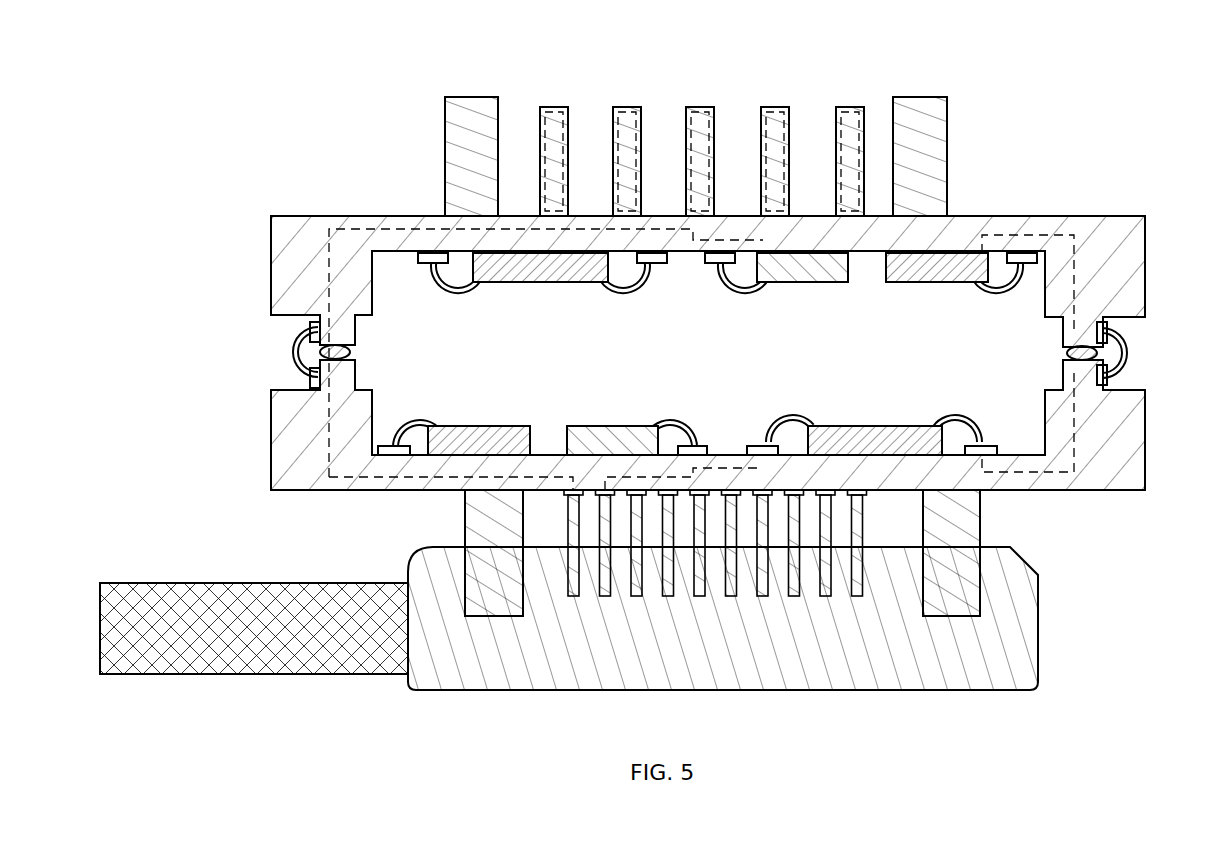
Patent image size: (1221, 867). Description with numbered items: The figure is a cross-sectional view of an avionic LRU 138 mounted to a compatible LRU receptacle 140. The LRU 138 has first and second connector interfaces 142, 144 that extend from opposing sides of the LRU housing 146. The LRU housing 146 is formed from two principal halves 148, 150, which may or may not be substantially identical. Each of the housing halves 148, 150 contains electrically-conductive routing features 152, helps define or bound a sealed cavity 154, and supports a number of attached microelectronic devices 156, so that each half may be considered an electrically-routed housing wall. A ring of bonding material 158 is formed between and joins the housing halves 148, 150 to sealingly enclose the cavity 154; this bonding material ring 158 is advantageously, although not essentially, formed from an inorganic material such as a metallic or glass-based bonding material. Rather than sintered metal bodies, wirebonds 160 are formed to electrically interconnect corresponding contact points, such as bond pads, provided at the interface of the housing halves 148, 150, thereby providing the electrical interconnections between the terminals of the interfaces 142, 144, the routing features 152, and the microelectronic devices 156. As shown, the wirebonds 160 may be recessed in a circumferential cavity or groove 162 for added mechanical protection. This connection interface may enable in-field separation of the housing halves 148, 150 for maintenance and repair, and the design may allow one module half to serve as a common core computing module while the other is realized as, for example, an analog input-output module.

The avionic LRU 138 is at (252, 148).
The LRU receptacle 140 is at (1036, 648).
The first connector interface 142 is at (950, 112).
The second connector interface 144 is at (982, 512).
The LRU housing 146 is at (270, 446).
The first housing half 148 is at (1138, 240).
The second housing half 150 is at (1140, 463).
The electrically-conductive routing features 152 is at (343, 229).
The sealed cavity 154 is at (699, 353).
The microelectronic devices 156 is at (536, 282).
The ring of bonding material 158 is at (1068, 353).
The wirebonds 160 is at (293, 352).
The circumferential cavity or groove 162 is at (300, 388).